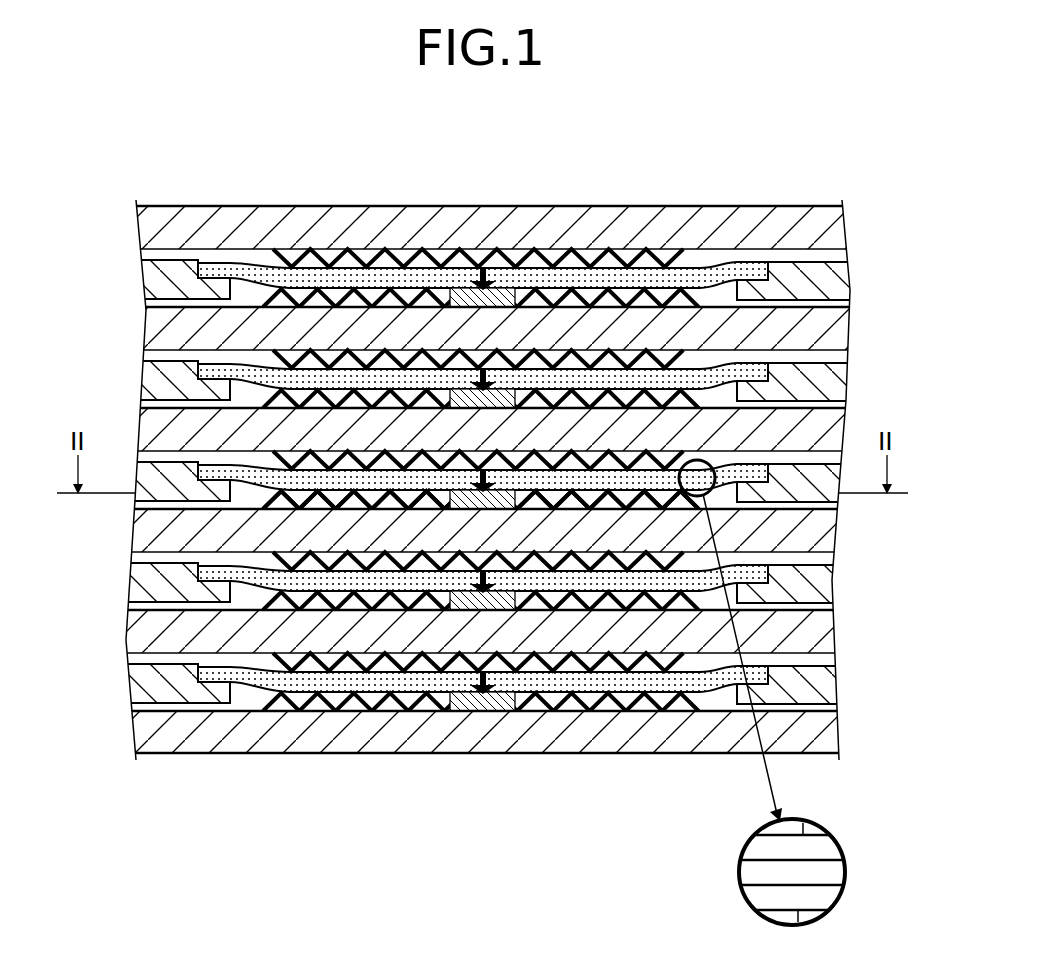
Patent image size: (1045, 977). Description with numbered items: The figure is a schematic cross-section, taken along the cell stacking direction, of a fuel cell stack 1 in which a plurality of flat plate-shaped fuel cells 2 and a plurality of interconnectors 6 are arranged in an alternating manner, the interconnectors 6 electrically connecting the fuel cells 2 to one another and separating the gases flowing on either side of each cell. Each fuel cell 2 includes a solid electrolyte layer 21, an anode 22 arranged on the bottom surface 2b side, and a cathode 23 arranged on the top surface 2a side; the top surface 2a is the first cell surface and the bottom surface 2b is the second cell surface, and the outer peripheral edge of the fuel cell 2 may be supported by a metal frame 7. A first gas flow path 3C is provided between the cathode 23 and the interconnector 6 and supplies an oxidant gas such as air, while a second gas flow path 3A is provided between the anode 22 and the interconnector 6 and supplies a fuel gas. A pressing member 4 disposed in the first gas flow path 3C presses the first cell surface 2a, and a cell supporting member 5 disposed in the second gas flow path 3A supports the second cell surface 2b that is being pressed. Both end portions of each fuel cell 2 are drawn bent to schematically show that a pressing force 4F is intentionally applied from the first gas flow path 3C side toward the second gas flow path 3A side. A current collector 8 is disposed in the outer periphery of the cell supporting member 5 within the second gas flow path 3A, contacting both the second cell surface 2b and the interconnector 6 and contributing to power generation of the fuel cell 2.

The fuel cell stack 1 is at (779, 188).
The fuel cell 2 is at (628, 480).
The top surface 2a is at (803, 823).
The bottom surface 2b is at (798, 922).
The solid electrolyte layer 21 is at (830, 875).
The anode 22 is at (825, 897).
The cathode 23 is at (830, 850).
The second gas flow path 3A is at (248, 498).
The first gas flow path 3C is at (250, 454).
The pressing member 4 is at (293, 450).
The pressing force 4F is at (507, 492).
The cell supporting member 5 is at (467, 512).
The interconnector 6 is at (832, 432).
The metal frame 7 is at (832, 477).
The current collector 8 is at (287, 497).